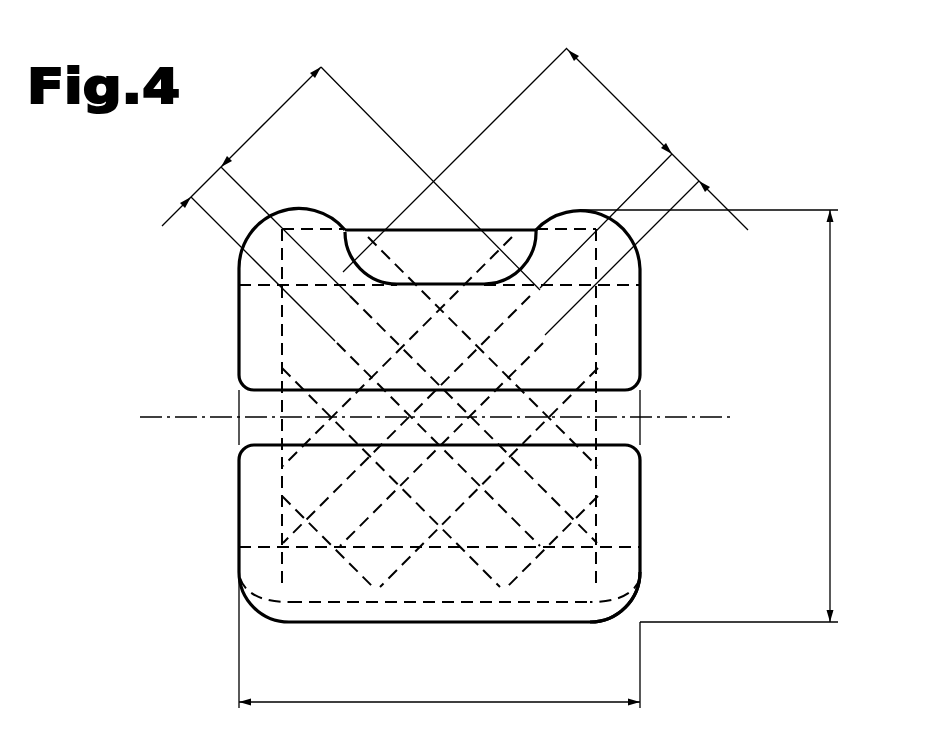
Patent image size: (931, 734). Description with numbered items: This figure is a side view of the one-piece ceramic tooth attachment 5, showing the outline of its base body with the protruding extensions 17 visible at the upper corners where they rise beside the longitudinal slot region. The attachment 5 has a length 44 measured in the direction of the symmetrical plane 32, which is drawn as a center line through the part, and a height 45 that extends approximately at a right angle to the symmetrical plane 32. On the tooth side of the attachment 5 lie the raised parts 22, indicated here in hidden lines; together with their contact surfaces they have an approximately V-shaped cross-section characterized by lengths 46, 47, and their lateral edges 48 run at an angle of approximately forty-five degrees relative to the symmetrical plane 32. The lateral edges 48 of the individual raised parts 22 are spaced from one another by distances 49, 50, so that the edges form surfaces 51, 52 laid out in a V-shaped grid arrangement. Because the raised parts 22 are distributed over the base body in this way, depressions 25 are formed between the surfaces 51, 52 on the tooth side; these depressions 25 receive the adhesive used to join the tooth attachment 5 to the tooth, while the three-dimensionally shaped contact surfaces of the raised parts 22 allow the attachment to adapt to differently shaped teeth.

The tooth attachment 5 is at (777, 73).
The protruding extensions 17 is at (303, 222).
The raised parts 22 is at (512, 265).
The depressions 25 is at (375, 365).
The symmetrical plane 32 is at (149, 414).
The length 44 is at (400, 700).
The height 45 is at (832, 417).
The length of V-shaped cross-section 46 is at (275, 113).
The length of V-shaped cross-section 47 is at (655, 128).
The lateral edges 48 is at (480, 268).
The distance 49 is at (210, 177).
The distance 50 is at (685, 163).
The surface 51 is at (310, 485).
The surface 52 is at (505, 560).